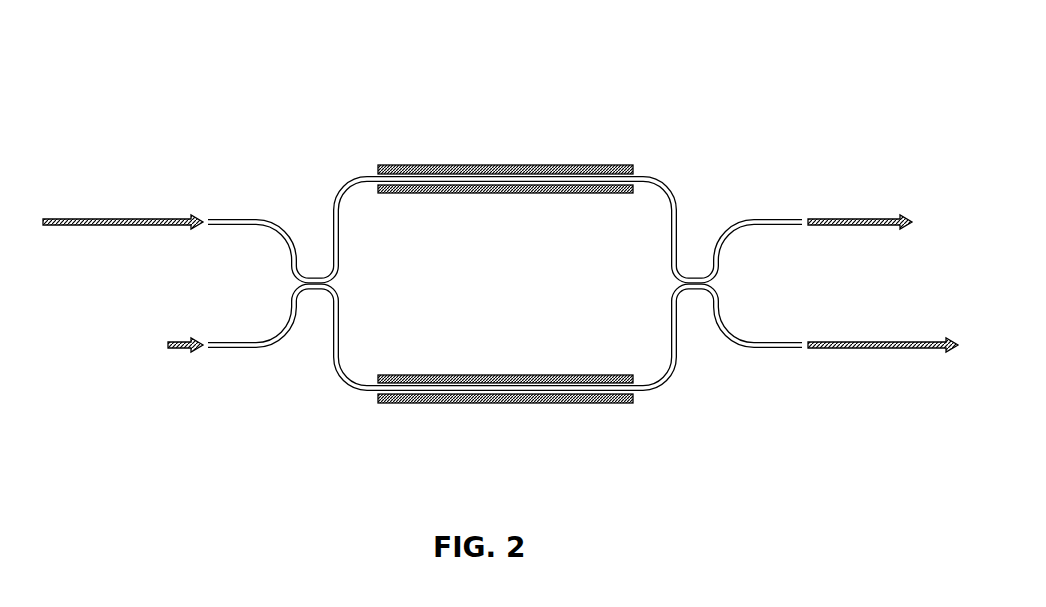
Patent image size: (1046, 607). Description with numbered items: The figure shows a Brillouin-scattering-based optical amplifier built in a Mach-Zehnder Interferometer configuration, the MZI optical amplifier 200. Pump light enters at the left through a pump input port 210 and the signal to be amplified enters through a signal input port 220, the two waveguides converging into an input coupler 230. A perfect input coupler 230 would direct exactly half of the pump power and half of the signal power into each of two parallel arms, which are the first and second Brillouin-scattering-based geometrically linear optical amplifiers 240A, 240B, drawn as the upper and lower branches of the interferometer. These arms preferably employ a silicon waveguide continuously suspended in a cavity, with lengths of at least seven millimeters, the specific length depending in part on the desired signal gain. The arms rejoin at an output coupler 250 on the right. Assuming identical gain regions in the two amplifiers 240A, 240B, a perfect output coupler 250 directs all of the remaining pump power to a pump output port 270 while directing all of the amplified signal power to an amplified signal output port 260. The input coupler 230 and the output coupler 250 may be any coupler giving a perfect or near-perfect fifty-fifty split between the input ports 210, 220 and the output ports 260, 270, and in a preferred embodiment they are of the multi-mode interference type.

The MZI optical amplifier 200 is at (542, 37).
The pump input port 210 is at (199, 199).
The signal input port 220 is at (200, 362).
The input coupler 230 is at (314, 265).
The first Brillouin-scattering-based geometrically linear optical amplifier 240A is at (504, 152).
The second Brillouin-scattering-based geometrically linear optical amplifier 240B is at (504, 422).
The output coupler 250 is at (696, 265).
The amplified signal output port 260 is at (811, 196).
The pump output port 270 is at (811, 375).